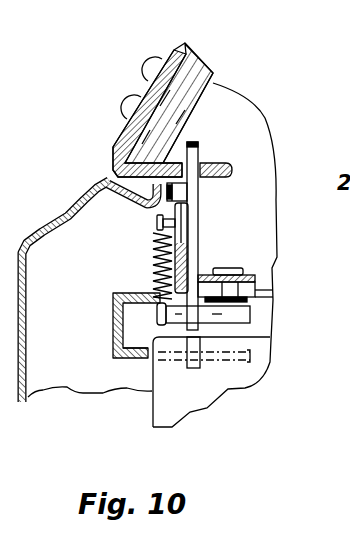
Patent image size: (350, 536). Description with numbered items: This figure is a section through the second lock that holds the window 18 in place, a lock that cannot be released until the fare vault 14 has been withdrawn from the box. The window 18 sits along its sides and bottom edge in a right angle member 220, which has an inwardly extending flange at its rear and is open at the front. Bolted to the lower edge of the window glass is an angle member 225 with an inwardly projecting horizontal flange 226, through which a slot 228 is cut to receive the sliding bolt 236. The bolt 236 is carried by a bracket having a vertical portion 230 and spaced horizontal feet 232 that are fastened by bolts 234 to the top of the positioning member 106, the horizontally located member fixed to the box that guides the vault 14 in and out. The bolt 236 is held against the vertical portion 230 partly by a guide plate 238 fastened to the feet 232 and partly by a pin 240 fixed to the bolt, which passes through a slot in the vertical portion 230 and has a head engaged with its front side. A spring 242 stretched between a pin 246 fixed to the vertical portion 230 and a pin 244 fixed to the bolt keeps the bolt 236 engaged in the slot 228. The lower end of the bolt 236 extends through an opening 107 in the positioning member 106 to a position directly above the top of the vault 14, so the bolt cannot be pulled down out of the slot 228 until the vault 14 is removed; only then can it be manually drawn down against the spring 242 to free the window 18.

The vault 14 is at (197, 402).
The window 18 is at (202, 64).
The positioning member 106 is at (113, 348).
The opening 107 is at (113, 298).
The right angle member 220 is at (108, 177).
The angle member 225 is at (114, 142).
The horizontal flange 226 is at (218, 163).
The slot 228 is at (213, 160).
The vertical portion 230 is at (150, 272).
The horizontal feet 232 is at (257, 290).
The bolts 234 is at (233, 267).
The sliding bolt 236 is at (190, 280).
The guide plate 238 is at (253, 278).
The pin 240 is at (187, 200).
The spring 242 is at (153, 258).
The pin 244 is at (113, 319).
The pin 246 is at (158, 222).